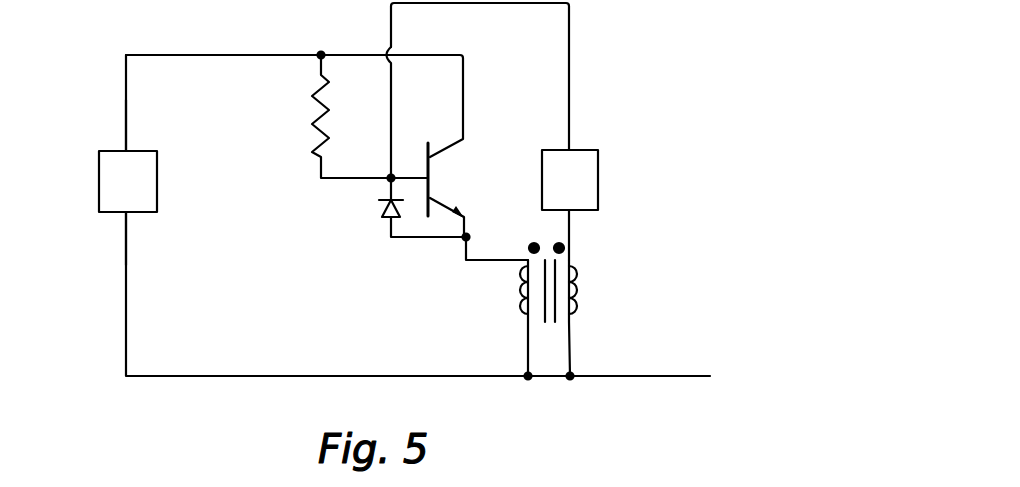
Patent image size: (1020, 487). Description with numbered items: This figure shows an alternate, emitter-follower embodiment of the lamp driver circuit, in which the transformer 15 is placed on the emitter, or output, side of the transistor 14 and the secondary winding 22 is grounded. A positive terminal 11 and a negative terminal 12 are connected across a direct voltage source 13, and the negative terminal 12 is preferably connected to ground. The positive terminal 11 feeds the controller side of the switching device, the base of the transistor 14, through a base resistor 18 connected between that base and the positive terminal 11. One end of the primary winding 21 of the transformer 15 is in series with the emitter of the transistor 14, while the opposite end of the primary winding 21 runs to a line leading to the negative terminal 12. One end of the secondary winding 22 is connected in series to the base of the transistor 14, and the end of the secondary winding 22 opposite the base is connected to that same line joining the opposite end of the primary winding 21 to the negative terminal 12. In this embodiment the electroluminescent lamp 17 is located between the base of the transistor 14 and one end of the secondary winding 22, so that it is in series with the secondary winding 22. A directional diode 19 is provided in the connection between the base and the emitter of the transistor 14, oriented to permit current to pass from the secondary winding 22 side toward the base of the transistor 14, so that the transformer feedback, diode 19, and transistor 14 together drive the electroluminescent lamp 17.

The positive terminal 11 is at (117, 144).
The negative terminal 12 is at (118, 218).
The direct voltage source 13 is at (99, 182).
The transistor 14 is at (442, 174).
The transformer 15 is at (562, 299).
The electroluminescent lamp 17 is at (598, 188).
The base resistor 18 is at (312, 112).
The directional diode 19 is at (380, 213).
The primary winding 21 is at (522, 292).
The secondary winding 22 is at (576, 275).